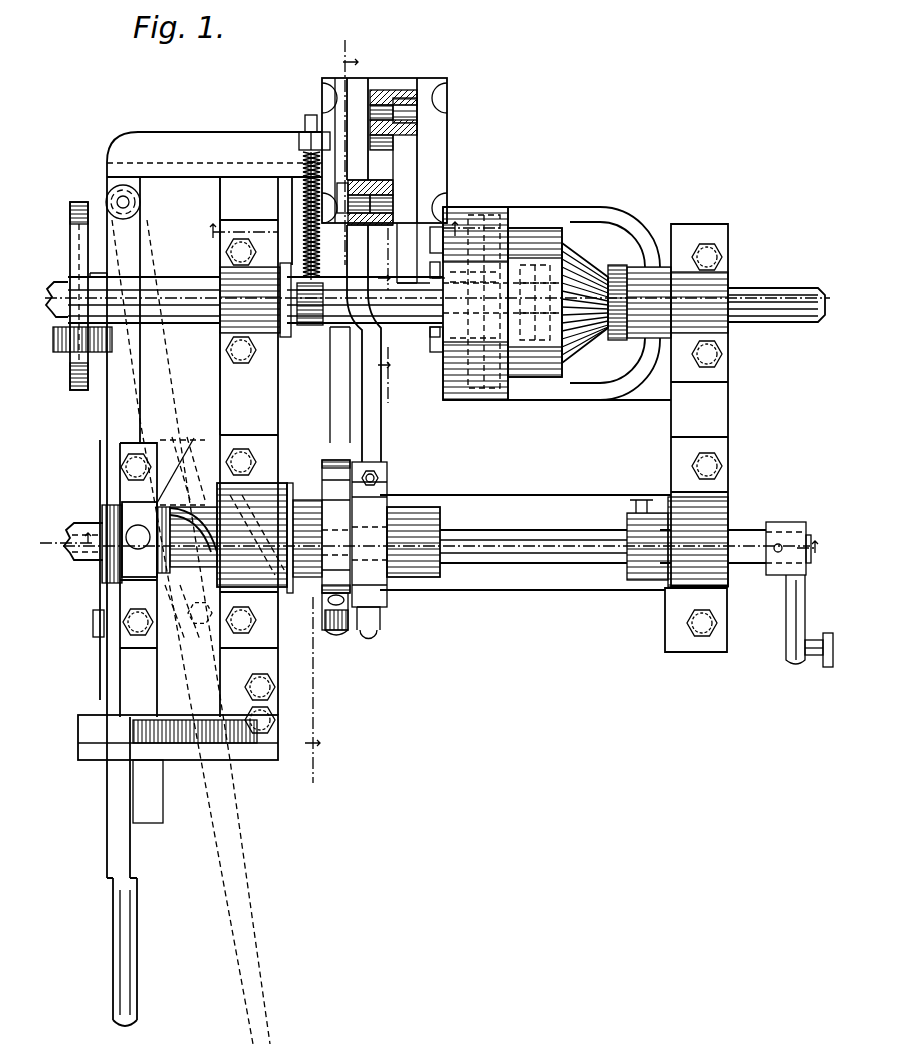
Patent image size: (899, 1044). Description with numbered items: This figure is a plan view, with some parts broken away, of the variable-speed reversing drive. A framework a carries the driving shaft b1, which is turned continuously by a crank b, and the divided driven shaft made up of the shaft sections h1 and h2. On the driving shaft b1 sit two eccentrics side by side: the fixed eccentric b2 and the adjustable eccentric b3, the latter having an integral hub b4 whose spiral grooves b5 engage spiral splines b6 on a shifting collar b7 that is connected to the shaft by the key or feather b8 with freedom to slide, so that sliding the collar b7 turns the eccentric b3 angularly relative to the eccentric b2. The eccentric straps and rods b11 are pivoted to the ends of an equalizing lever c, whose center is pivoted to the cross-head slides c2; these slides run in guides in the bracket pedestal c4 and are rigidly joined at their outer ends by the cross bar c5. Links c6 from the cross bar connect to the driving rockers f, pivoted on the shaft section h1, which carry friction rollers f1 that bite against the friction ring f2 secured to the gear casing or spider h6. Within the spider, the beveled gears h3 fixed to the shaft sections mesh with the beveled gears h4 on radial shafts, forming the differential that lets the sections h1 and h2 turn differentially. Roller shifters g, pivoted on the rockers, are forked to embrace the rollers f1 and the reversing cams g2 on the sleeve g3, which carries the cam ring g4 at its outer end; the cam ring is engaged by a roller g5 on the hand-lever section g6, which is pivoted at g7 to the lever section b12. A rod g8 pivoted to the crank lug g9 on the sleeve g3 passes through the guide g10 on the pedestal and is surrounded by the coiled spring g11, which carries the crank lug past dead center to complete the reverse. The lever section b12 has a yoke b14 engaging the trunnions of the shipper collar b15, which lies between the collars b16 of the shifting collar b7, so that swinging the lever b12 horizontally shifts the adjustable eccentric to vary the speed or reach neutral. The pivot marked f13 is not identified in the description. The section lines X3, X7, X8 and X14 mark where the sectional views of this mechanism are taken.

The framework a is at (230, 402).
The crank b is at (789, 617).
The driving shaft b1 is at (74, 568).
The fixed eccentric b2 is at (388, 608).
The adjustable eccentric b3 is at (319, 622).
The hub b4 is at (298, 508).
The spiral grooves b5 is at (385, 542).
The spiral splines b6 is at (196, 515).
The shifting-collar b7 is at (242, 488).
The key or feather b8 is at (226, 735).
The eccentric straps and rods b11 is at (373, 418).
The lever-section b12 is at (158, 808).
The yoke b14 is at (106, 580).
The shipper-collar b15 is at (184, 532).
The collars b16 is at (79, 563).
The equalizing-lever c is at (345, 341).
The cross-head slides c2 is at (358, 95).
The bracket-pedestal c4 is at (411, 80).
The cross-bar c5 is at (381, 92).
The links c6 is at (407, 177).
The driving-rockers f is at (80, 758).
The friction-rollers f1 is at (554, 530).
The friction band or ring f2 is at (446, 402).
The pulley f13 is at (141, 202).
The roller-shifters g is at (440, 342).
The reversing-cams g2 is at (433, 270).
The sleeve g3 is at (203, 306).
The cam-ring g4 is at (76, 392).
The roller g5 is at (68, 354).
The hand-lever section g6 is at (107, 806).
The pivot connection of lever-sections g7 is at (93, 646).
The rod g8 is at (300, 190).
The crank-lug g9 is at (319, 280).
The guide g10 is at (298, 142).
The coiled spring g11 is at (300, 212).
The shaft-section h1 is at (48, 283).
The shaft-section h2 is at (771, 292).
The beveled gears h3 is at (618, 268).
The beveled gears h4 is at (580, 235).
The gear-casing h6 is at (565, 394).
The section line x3 x3 X3 is at (386, 315).
The section line x7 x7 X7 is at (342, 224).
The section line x8 x8 X8 is at (330, 411).
The section line x14 x14 X14 is at (440, 536).